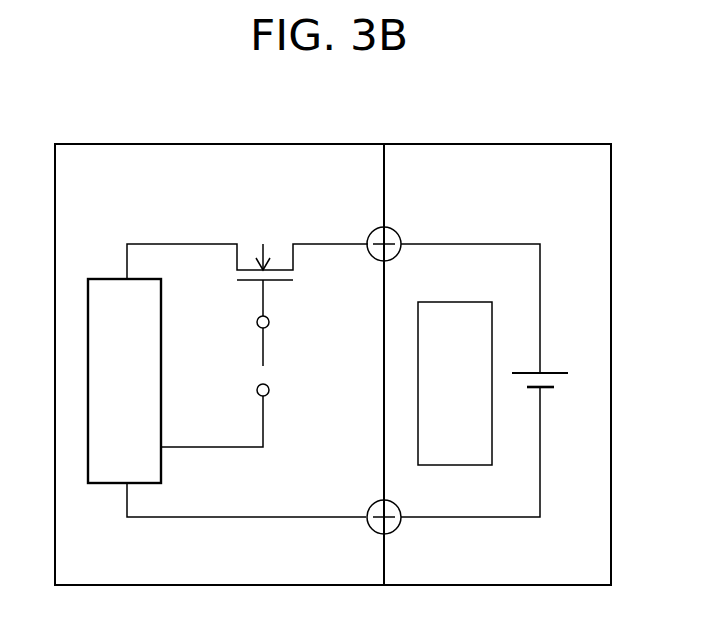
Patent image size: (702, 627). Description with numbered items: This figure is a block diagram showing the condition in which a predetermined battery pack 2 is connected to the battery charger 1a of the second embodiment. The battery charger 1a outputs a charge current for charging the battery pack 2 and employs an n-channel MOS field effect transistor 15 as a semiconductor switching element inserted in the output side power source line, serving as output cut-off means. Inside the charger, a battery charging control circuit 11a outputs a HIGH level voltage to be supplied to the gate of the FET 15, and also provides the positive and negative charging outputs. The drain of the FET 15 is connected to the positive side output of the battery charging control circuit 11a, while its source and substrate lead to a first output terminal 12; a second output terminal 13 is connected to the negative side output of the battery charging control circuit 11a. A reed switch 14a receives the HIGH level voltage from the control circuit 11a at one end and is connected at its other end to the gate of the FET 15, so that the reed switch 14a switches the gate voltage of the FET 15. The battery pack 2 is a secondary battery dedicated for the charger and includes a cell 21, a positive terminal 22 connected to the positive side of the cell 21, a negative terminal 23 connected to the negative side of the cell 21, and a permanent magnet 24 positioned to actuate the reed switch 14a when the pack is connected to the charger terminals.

The battery charger 1a is at (135, 144).
The battery pack 2 is at (421, 144).
The battery charging control circuit 11a is at (108, 279).
The first output terminal 12 is at (371, 257).
The second output terminal 13 is at (370, 531).
The reed switch 14a is at (263, 366).
The n-channel MOS field effect transistor 15 is at (268, 240).
The cell 21 is at (550, 373).
The positive terminal 22 is at (396, 233).
The negative terminal 23 is at (397, 531).
The magnet 24 is at (447, 302).